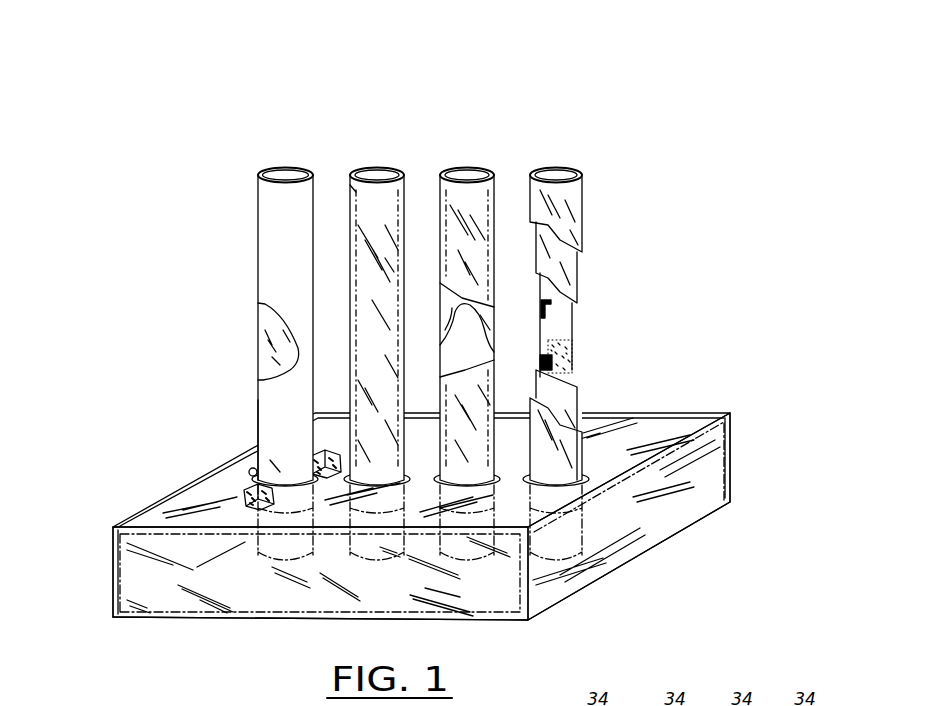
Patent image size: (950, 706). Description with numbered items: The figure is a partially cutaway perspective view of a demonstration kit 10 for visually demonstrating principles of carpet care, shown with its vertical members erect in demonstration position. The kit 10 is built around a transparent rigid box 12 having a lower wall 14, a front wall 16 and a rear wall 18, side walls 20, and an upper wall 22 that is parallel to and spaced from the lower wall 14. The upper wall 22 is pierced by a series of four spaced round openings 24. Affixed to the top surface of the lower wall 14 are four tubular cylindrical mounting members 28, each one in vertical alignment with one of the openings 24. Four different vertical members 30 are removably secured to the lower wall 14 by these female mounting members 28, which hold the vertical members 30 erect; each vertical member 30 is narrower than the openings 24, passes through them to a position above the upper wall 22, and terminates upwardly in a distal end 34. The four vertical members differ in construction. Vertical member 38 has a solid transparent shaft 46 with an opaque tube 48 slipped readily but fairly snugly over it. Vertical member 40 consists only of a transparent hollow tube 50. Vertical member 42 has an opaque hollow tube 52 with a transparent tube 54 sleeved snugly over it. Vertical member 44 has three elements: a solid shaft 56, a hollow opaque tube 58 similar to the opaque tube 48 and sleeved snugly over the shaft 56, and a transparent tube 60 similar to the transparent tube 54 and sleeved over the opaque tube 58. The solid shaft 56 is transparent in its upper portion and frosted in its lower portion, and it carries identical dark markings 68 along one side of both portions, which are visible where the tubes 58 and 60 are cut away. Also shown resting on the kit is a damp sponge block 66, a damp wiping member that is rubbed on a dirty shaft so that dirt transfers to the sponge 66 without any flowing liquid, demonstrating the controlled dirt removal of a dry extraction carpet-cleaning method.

The demonstration kit 10 is at (778, 161).
The transparent rigid box 12 is at (708, 482).
The lower wall 14 is at (147, 620).
The front wall 16 is at (247, 577).
The rear wall 18 is at (733, 443).
The side walls 20 is at (115, 578).
The upper wall 22 is at (203, 515).
The openings 24 is at (253, 468).
The mounting members 28 is at (297, 565).
The vertical members 30 is at (277, 203).
The distal ends 34 is at (271, 168).
The vertical member 38 is at (270, 396).
The vertical member 40 is at (385, 182).
The vertical member 42 is at (478, 182).
The vertical member 44 is at (565, 302).
The solid transparent shaft 46 is at (270, 324).
The opaque tube 48 is at (275, 222).
The transparent hollow tube 50 is at (350, 192).
The opaque hollow tube 52 is at (482, 325).
The transparent tube 54 is at (482, 380).
The solid shaft 56 is at (560, 318).
The hollow opaque tube 58 is at (565, 258).
The transparent tube 60 is at (560, 440).
The damp sponge block 66 is at (243, 497).
The dark markings 68 is at (562, 328).